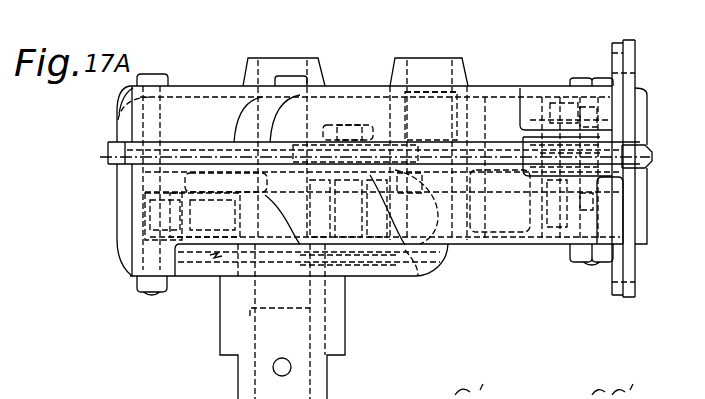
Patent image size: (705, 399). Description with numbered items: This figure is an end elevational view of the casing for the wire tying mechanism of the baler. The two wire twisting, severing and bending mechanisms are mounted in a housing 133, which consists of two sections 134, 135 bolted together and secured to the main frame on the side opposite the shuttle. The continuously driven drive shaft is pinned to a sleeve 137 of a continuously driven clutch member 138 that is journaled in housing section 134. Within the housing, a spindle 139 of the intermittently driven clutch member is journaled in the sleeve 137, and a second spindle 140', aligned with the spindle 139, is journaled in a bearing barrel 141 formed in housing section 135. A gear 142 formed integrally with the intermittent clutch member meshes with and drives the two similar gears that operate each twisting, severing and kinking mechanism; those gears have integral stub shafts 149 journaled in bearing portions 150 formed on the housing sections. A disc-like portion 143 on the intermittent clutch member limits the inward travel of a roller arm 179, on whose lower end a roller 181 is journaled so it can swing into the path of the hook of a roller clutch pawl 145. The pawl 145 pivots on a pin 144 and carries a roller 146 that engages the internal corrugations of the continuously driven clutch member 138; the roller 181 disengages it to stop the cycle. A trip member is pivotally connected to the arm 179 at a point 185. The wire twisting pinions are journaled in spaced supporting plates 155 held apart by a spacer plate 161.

The casing or housing 133 is at (110, 221).
The housing section 134 is at (117, 246).
The housing section 135 is at (117, 114).
The sleeve 137 is at (238, 377).
The continuously driven clutch member 138 is at (398, 262).
The spindle 139 is at (228, 320).
The second spindle 140' is at (186, 61).
The bearing barrel 141 is at (316, 67).
The gear 142 is at (108, 158).
The disc-like portion 143 is at (179, 201).
The pin 144 is at (356, 120).
The roller clutch pawl 145 is at (221, 201).
The roller 146 is at (416, 275).
The spindles or stub shafts 149 is at (390, 69).
The bearing portions 150 is at (470, 57).
The supporting plates or bars 155 is at (650, 154).
The spacer plate 161 is at (524, 88).
The roller arm or lever 179 is at (431, 140).
The roller 181 is at (433, 249).
The pivotal connection 185 is at (466, 114).